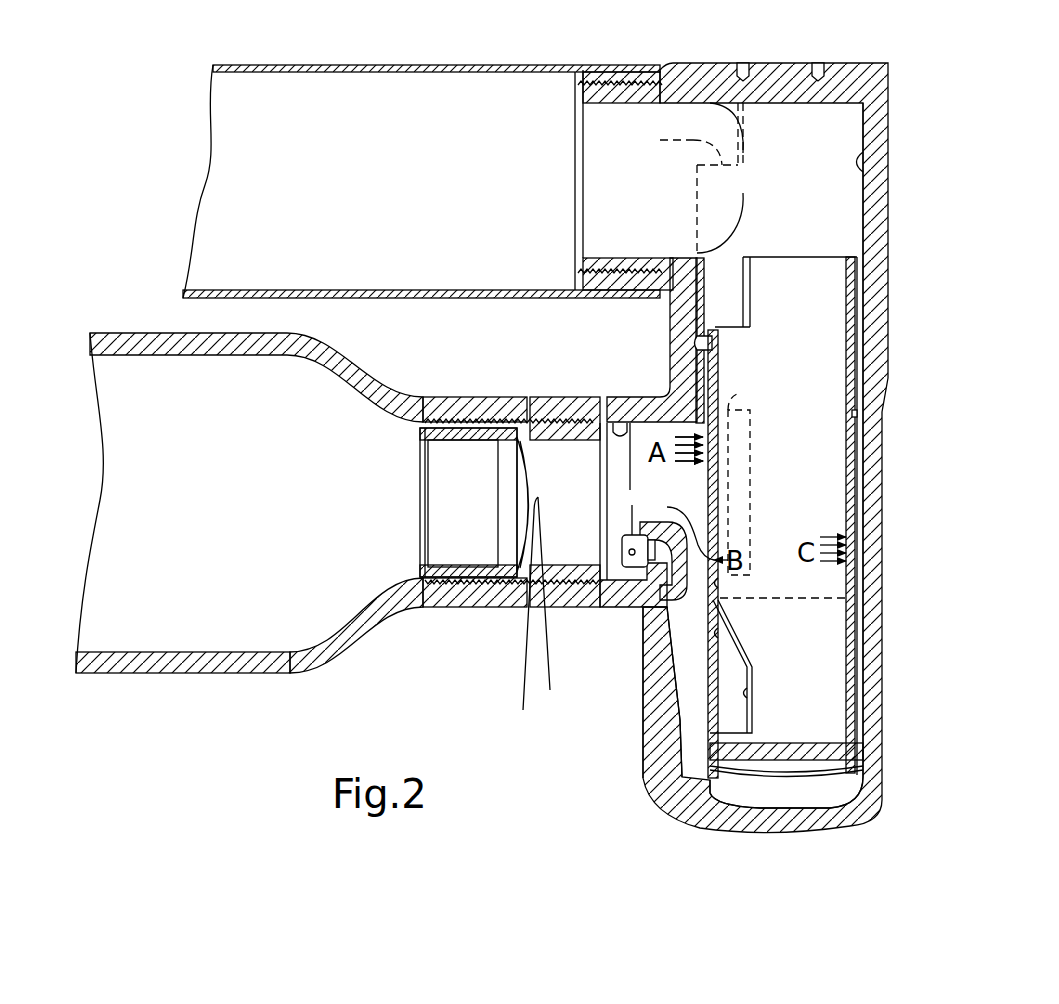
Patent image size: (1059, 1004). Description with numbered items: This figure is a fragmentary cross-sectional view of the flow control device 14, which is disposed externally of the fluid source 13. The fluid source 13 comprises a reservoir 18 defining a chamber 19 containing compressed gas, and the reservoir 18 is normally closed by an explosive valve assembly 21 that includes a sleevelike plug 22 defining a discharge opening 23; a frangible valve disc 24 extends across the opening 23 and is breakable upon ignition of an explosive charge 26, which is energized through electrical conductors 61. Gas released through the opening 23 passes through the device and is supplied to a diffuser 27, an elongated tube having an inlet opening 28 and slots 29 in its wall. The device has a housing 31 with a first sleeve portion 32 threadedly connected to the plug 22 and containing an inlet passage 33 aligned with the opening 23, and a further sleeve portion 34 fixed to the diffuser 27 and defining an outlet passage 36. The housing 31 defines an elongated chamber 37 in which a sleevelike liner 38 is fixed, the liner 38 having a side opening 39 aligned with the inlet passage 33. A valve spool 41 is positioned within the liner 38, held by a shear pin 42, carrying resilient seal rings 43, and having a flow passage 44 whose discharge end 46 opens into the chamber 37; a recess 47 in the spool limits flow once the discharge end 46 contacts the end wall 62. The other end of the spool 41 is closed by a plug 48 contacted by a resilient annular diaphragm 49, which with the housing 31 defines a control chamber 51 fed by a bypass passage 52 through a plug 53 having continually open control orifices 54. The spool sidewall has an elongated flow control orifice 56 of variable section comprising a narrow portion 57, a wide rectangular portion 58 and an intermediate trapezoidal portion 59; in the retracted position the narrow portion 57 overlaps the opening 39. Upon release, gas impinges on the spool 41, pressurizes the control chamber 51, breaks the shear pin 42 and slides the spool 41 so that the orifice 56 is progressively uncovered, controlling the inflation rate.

The fluid source 13 is at (205, 676).
The flow control device 14 is at (886, 497).
The reservoir 18 is at (295, 674).
The chamber 19 is at (333, 608).
The explosive valve assembly 21 is at (477, 416).
The sleevelike plug 22 is at (498, 590).
The discharge opening 23 is at (420, 538).
The frangible valve disc 24 is at (420, 468).
The explosive charge 26 is at (512, 470).
The diffuser 27 is at (203, 147).
The inlet opening 28 is at (528, 93).
The orifices or slots 29 is at (331, 68).
The housing 31 is at (878, 204).
The first sleeve portion 32 is at (582, 407).
The inlet passage 33 is at (612, 427).
The further sleeve portion 34 is at (633, 93).
The outlet passage 36 is at (583, 253).
The elongated chamber 37 is at (868, 150).
The liner 38 is at (857, 323).
The opening 39 is at (735, 405).
The valve spool 41 is at (853, 647).
The shear pin 42 is at (695, 340).
The resilient seal rings 43 is at (853, 413).
The flow passage 44 is at (783, 346).
The discharge end 46 is at (818, 254).
The recess 47 is at (733, 272).
The plug or end plate 48 is at (842, 752).
The resilient annular diaphragm 49 is at (847, 773).
The control chamber 51 is at (797, 790).
The bypass passage 52 is at (683, 713).
The plug 53 is at (643, 613).
The control orifices 54 is at (632, 556).
The flow control orifice 56 is at (754, 650).
The narrow portion 57 is at (720, 583).
The wide rectangular portion 58 is at (748, 693).
The intermediate trapezoidal portion 59 is at (722, 633).
The electrical conductors 61 is at (527, 684).
The end wall 62 is at (828, 105).